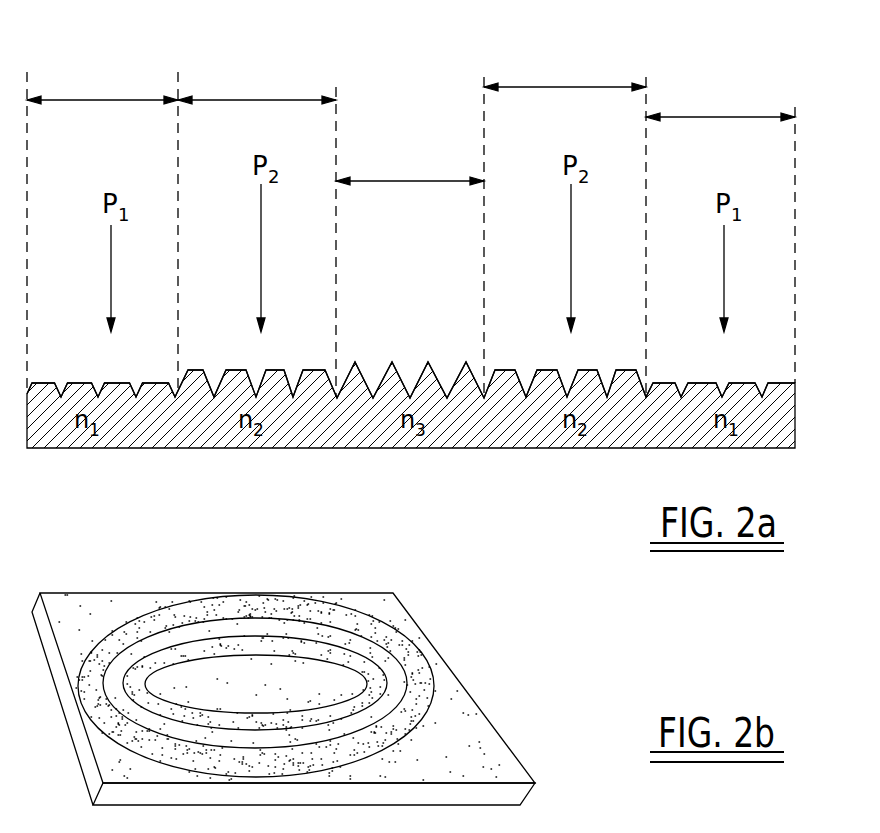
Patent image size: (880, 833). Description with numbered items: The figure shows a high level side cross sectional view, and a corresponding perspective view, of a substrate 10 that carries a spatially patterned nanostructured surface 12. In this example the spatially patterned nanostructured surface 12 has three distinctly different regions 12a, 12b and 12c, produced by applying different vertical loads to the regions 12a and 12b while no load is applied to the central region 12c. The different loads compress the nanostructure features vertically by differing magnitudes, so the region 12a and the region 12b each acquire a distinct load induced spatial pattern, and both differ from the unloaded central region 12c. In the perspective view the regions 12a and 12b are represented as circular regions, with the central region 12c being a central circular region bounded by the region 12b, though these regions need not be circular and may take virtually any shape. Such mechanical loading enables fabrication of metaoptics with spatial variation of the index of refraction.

In FIG. 2a, the substrate 10 is at (623, 455).
In FIG. 2a, the spatially patterned nanostructured surface 12 is at (766, 365).
In FIG. 2a, the first region 12a is at (101, 100).
In FIG. 2b, the first region 12a is at (413, 668).
In FIG. 2a, the second region 12b is at (256, 100).
In FIG. 2b, the second region 12b is at (287, 630).
In FIG. 2a, the central region 12c is at (416, 181).
In FIG. 2b, the central region 12c is at (220, 677).